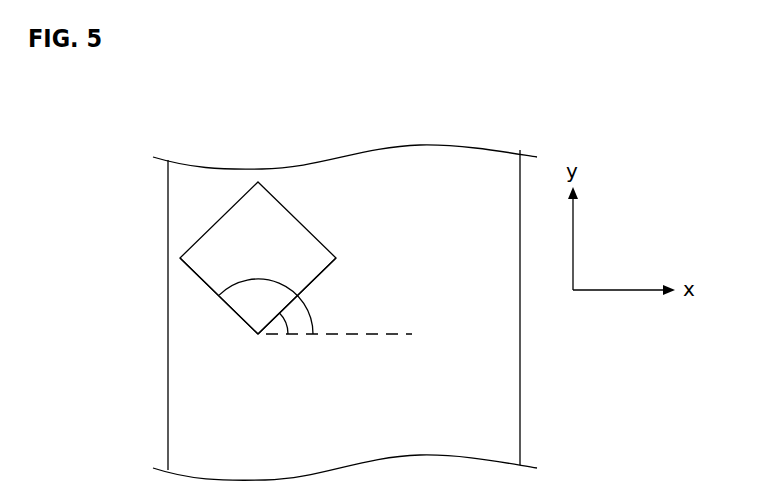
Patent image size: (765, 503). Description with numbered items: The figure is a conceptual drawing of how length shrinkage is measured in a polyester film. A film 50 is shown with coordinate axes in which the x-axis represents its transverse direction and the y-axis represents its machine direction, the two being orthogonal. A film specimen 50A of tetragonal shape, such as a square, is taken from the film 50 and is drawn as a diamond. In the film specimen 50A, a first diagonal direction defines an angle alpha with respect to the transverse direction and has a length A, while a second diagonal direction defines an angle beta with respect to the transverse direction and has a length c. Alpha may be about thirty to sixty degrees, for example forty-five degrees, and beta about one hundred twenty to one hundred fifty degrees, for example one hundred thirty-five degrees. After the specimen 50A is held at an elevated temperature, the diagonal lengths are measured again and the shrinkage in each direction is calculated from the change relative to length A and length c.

The film 50 is at (195, 409).
The film specimen 50A is at (298, 218).
The length of the first diagonal direction A is at (257, 323).
The length of the second diagonal direction c is at (257, 333).